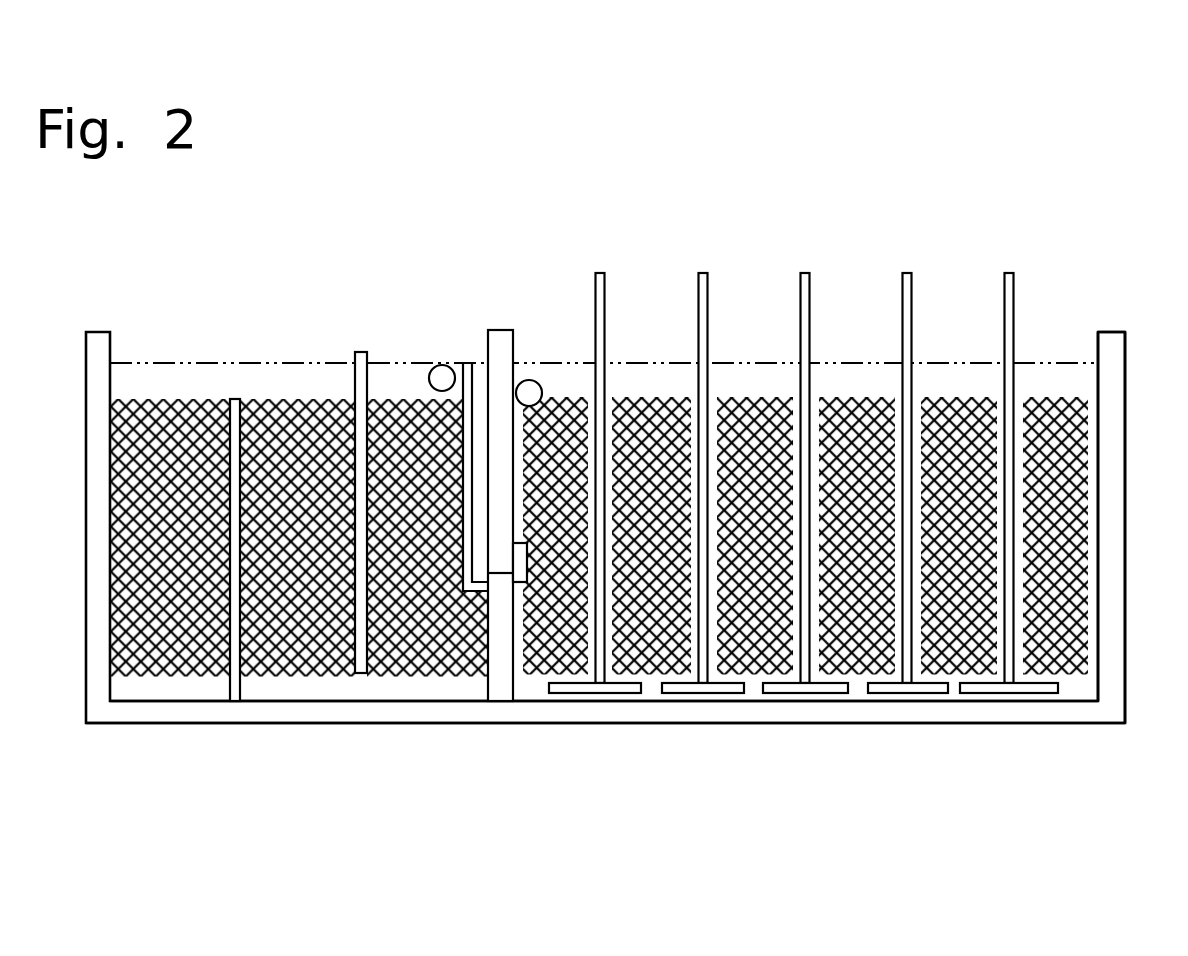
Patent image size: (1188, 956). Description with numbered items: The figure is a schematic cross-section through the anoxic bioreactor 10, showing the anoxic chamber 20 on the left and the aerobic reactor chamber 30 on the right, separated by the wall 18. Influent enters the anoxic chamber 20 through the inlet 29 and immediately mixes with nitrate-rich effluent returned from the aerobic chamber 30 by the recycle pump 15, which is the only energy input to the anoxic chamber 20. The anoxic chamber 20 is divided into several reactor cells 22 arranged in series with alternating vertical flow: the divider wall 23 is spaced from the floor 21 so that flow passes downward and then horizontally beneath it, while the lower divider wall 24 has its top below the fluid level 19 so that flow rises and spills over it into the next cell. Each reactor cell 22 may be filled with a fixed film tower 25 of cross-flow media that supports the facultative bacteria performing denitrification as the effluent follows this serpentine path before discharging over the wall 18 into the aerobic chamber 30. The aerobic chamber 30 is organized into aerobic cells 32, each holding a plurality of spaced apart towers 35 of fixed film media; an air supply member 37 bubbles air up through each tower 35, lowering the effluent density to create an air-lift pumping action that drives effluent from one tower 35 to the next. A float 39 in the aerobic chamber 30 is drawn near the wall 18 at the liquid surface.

The anoxic bioreactor 10 is at (972, 193).
The recycle pump 15 is at (517, 578).
The wall 18 is at (500, 340).
The liquid level 19 is at (157, 363).
The anoxic chamber 20 is at (299, 445).
The floor 21 is at (198, 723).
The reactor cell 22 is at (190, 393).
The divider wall 23 is at (354, 352).
The divider wall 24 is at (238, 688).
The fixed film tower 25 is at (283, 655).
The inlet 29 is at (443, 364).
The aerobic reactor chamber 30 is at (776, 212).
The aerobic cell 32 is at (1047, 303).
The tower 35 is at (750, 665).
The air supply member 37 is at (1004, 318).
The float 39 is at (538, 381).